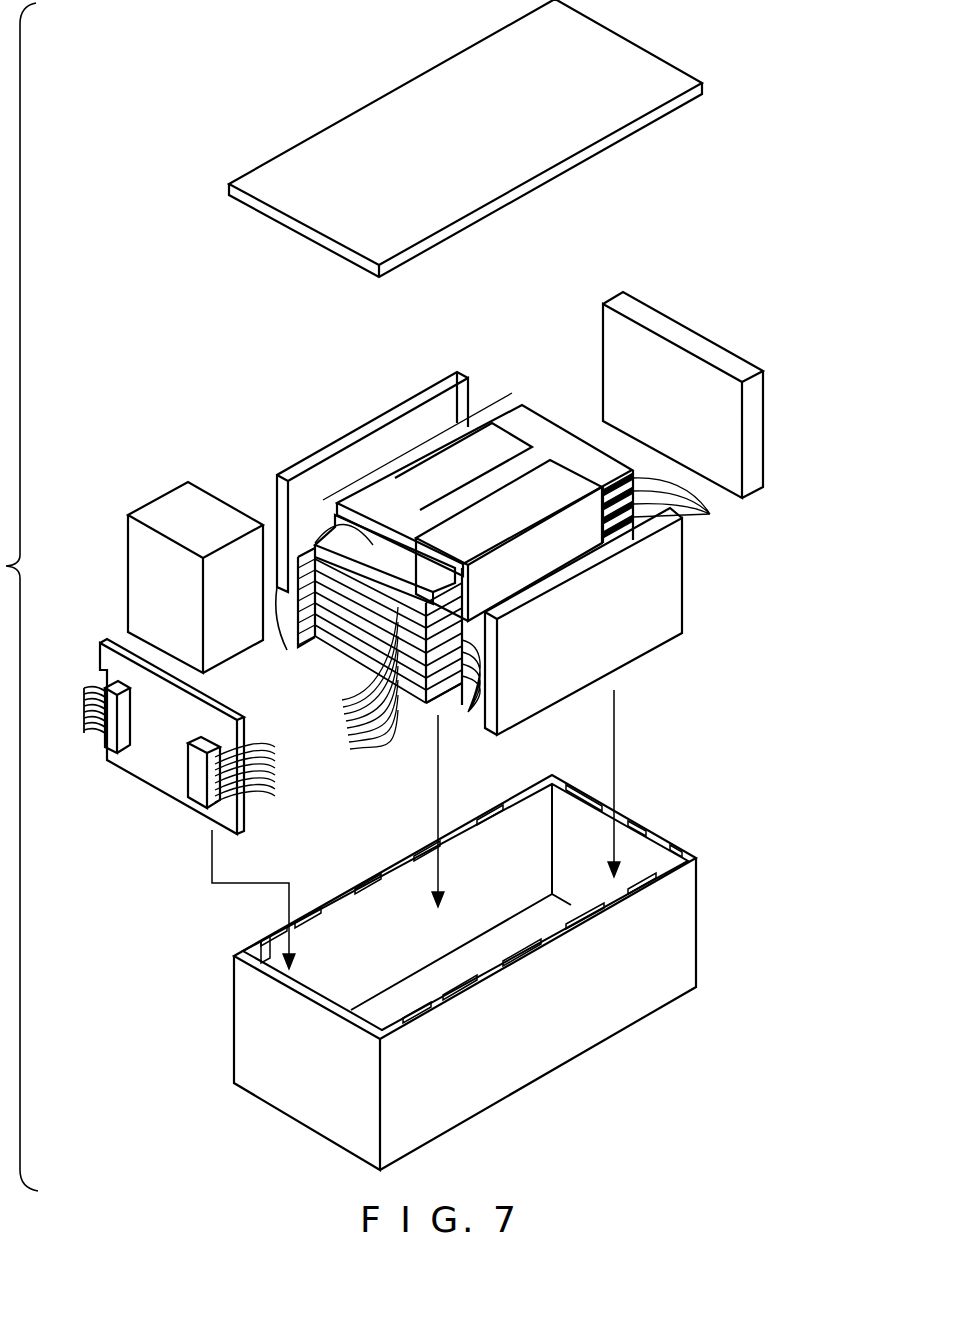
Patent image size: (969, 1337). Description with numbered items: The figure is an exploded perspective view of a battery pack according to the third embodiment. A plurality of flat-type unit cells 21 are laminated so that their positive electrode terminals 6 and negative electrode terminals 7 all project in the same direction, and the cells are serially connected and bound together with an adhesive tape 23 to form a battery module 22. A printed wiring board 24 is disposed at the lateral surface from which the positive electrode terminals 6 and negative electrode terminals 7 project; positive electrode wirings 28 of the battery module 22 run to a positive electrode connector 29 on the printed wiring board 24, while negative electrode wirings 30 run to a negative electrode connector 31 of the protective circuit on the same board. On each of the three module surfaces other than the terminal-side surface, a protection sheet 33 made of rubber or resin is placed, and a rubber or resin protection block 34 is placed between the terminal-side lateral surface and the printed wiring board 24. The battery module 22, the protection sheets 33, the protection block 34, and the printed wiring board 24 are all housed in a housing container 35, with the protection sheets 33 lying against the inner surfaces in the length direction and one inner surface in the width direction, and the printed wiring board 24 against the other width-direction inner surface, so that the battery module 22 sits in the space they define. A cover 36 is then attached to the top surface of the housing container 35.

The cover 36 is at (640, 63).
The protection sheet 33 is at (757, 436).
The battery module 22 is at (417, 438).
The adhesive tape 23 is at (553, 490).
The positive electrode terminal 6 is at (387, 593).
The negative electrode terminal 7 is at (343, 540).
The unit cell 21 is at (601, 611).
The positive electrode wiring 28 is at (283, 803).
The protection block 34 is at (170, 503).
The printed wiring board 24 is at (150, 773).
The negative electrode connector 31 is at (77, 673).
The negative electrode wiring 30 is at (100, 737).
The positive electrode connector 29 is at (197, 798).
The housing container 35 is at (688, 943).